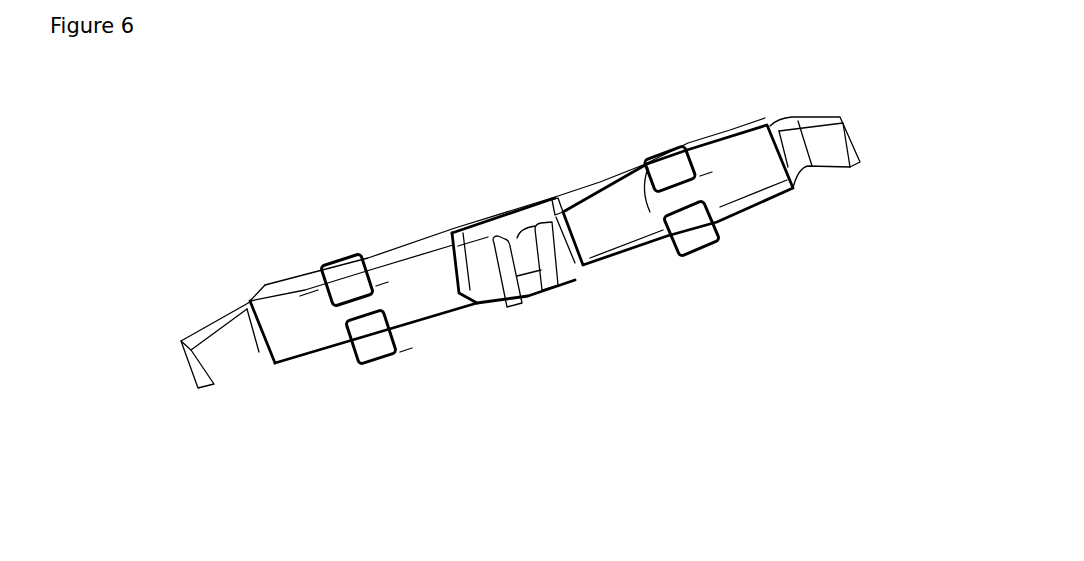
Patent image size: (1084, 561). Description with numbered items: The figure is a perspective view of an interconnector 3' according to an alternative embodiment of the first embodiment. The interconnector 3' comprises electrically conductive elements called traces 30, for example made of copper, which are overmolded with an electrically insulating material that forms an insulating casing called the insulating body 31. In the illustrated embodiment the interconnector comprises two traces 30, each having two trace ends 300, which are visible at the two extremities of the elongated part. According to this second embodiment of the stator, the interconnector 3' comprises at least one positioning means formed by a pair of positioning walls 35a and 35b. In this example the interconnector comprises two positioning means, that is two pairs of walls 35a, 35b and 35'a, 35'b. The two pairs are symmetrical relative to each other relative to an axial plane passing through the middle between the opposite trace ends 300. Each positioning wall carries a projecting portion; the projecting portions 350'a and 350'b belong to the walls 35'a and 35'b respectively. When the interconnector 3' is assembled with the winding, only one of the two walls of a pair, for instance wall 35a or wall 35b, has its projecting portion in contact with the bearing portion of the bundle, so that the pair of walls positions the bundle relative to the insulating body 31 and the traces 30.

The interconnector 3' is at (636, 383).
The trace 30 is at (226, 320).
The insulating body 31 is at (309, 293).
The trace end 300 is at (173, 357).
The positioning wall 35a is at (714, 265).
The positioning wall 35b is at (712, 186).
The positioning wall 35'a is at (516, 389).
The positioning wall 35'b is at (480, 328).
The projecting portion 350'a is at (423, 374).
The projecting portion 350'b is at (360, 214).